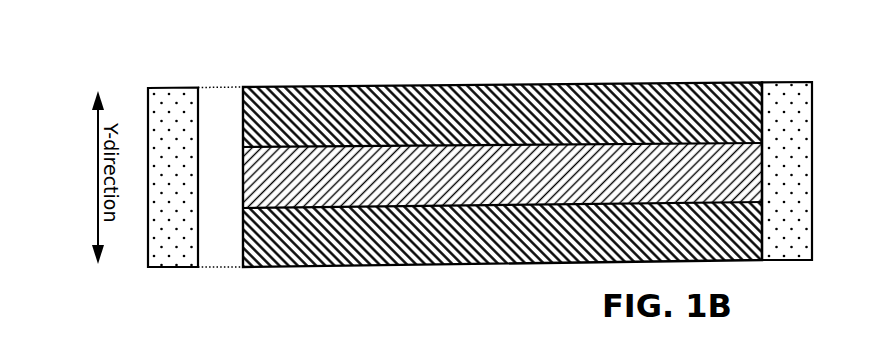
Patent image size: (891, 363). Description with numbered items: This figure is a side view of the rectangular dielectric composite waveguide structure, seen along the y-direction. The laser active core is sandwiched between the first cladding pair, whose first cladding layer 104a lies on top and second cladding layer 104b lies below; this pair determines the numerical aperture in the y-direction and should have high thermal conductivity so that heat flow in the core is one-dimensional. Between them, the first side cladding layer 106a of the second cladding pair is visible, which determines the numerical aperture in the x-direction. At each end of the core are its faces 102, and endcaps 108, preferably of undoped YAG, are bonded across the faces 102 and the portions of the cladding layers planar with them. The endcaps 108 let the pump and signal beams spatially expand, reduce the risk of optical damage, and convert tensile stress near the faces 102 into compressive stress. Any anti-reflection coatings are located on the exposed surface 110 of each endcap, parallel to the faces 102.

The faces 102 is at (480, 195).
The first cladding layer 104a is at (502, 97).
The second cladding layer 104b is at (502, 256).
The first side cladding layer 106a is at (502, 227).
The endcaps 108 is at (505, 156).
The exposed surface 110 is at (170, 210).